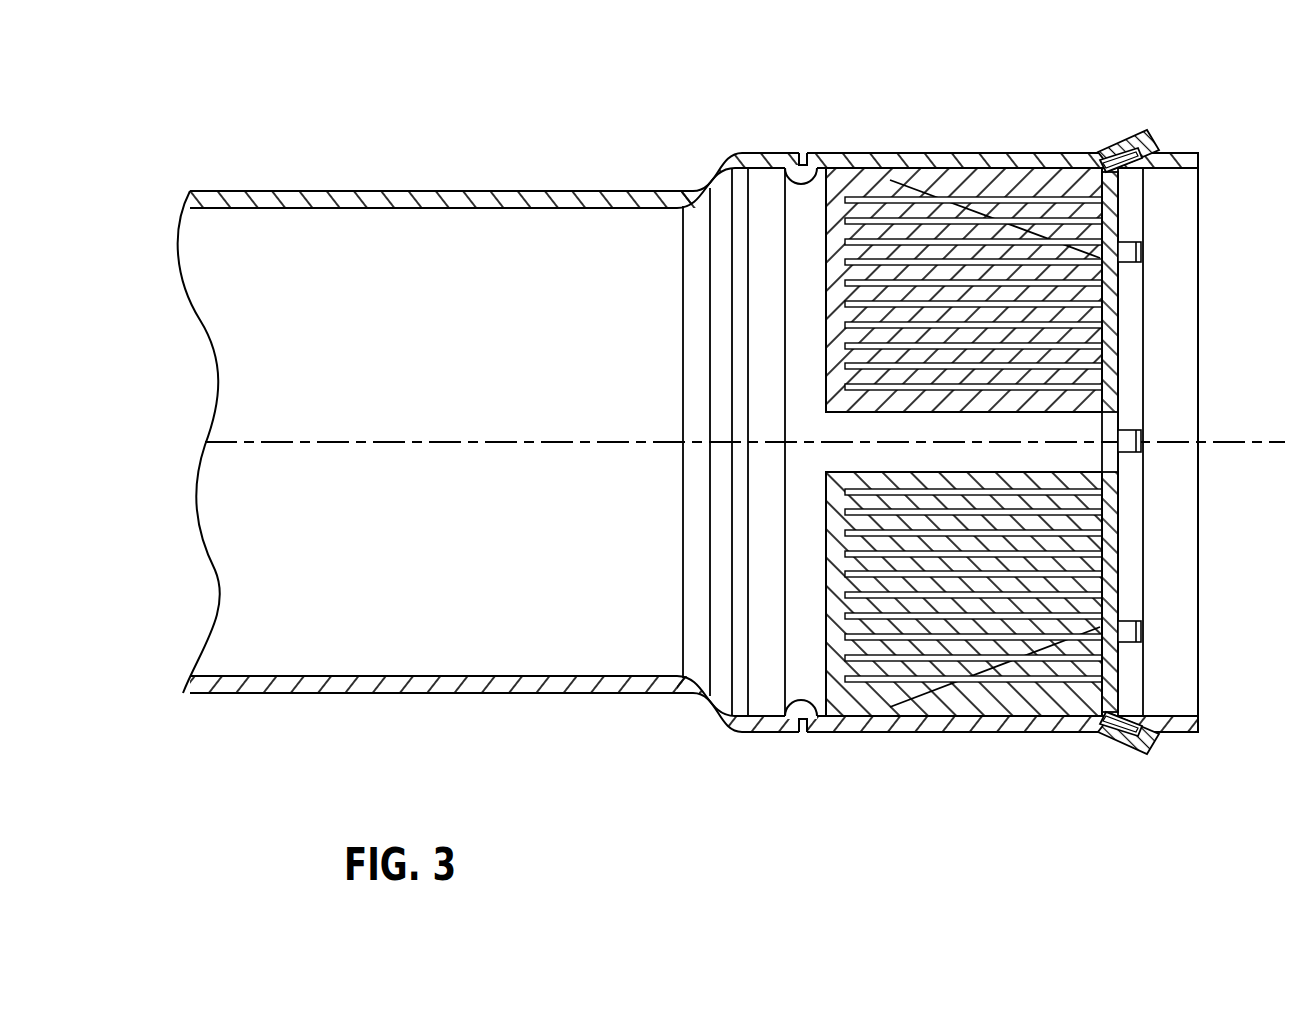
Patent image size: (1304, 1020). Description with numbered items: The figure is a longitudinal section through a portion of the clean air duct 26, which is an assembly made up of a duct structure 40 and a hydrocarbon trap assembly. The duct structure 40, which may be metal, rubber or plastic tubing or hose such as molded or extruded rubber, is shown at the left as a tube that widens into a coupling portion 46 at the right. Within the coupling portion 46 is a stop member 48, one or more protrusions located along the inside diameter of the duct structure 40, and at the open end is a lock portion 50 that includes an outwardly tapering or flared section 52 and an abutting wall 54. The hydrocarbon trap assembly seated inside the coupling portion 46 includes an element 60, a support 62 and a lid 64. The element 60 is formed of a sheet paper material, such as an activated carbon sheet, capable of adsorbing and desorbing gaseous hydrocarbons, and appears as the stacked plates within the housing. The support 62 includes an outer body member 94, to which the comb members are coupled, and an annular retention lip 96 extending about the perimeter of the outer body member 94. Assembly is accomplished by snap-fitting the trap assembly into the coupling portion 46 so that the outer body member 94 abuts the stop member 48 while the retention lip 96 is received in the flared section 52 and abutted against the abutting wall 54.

The clean air duct 26 is at (806, 748).
The duct structure 40 is at (392, 192).
The coupling portion 46 is at (757, 153).
The stop member 48 is at (810, 185).
The lock portion 50 is at (1133, 98).
The outwardly flared section 52 is at (1125, 150).
The abutting wall 54 is at (1140, 163).
The element 60 is at (1085, 327).
The support 62 is at (845, 483).
The lid 64 is at (1115, 370).
The outer body member 94 is at (872, 168).
The annular retention lip 96 is at (1105, 735).